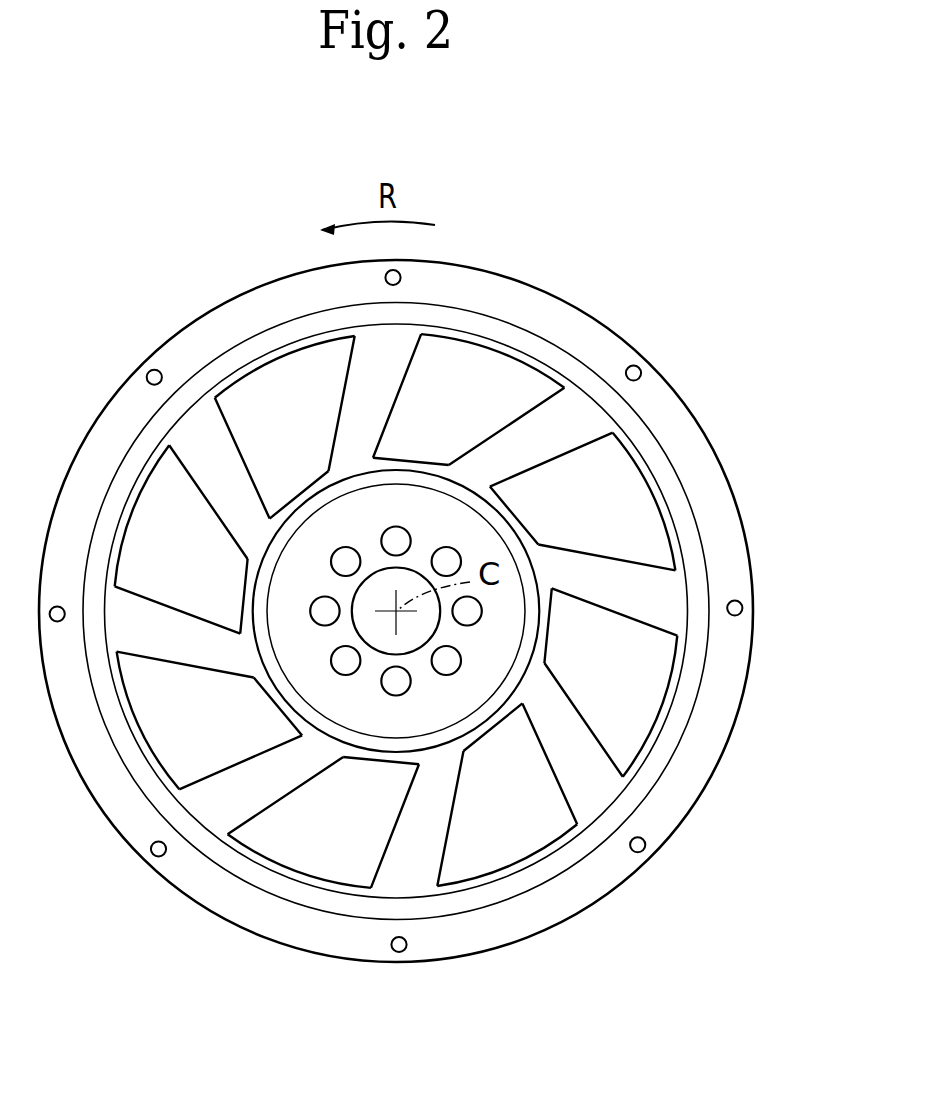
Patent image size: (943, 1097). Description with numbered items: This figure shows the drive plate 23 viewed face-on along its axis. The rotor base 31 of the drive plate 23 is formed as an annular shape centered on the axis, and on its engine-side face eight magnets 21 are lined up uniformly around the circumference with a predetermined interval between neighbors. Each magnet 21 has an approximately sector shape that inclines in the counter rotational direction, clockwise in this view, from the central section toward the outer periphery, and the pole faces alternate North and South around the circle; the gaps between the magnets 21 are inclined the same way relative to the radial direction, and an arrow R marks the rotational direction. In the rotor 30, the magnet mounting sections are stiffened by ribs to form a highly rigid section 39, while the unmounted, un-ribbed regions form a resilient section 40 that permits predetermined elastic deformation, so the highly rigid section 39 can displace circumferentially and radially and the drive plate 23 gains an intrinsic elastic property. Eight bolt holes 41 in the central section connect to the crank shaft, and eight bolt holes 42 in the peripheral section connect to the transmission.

The drive plate 23 is at (643, 256).
The rotor 30 is at (396, 611).
The rotor base 31 is at (585, 392).
The bolt holes 42 is at (641, 368).
The magnets 21 is at (462, 356).
The highly rigid section 39 is at (512, 375).
The resilient section 40 is at (593, 423).
The bolt holes 41 is at (341, 665).